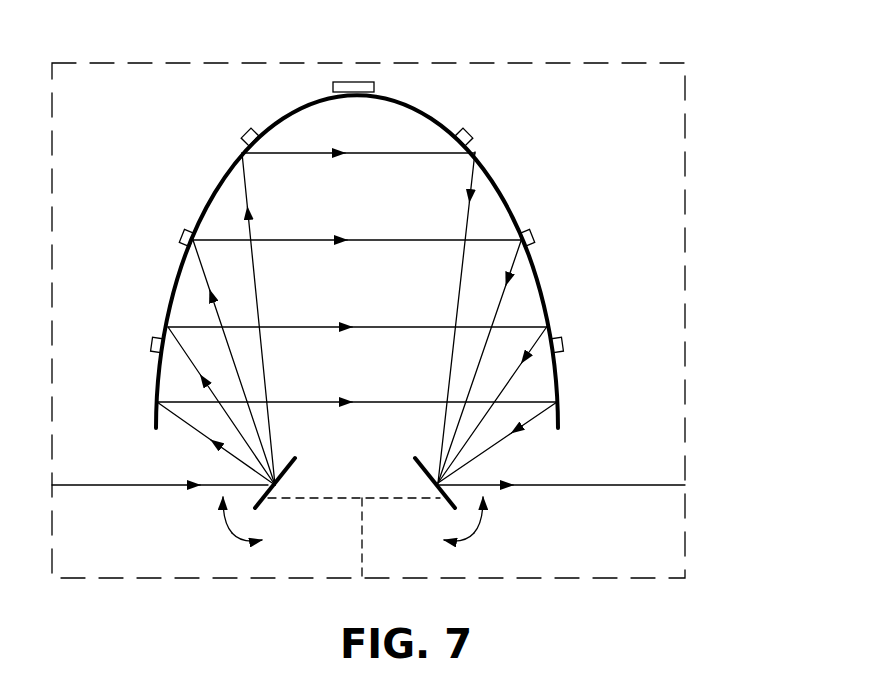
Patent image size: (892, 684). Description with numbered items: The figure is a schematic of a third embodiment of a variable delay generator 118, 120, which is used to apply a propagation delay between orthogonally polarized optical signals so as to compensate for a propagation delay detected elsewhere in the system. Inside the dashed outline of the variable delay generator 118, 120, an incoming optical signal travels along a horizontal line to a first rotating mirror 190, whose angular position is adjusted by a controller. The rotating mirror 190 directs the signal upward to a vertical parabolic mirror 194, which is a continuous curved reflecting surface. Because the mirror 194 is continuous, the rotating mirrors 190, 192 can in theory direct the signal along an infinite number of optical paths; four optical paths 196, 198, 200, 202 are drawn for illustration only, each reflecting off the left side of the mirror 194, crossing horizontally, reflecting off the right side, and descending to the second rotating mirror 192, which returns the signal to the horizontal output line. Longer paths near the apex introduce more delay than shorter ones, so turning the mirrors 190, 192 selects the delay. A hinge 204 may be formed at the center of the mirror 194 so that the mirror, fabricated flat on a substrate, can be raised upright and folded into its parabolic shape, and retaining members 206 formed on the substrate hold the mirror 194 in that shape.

The variable delay generator 118 is at (432, 290).
The variable delay generator 120 is at (641, 51).
The rotating mirror 190 is at (283, 480).
The rotating mirror 192 is at (428, 483).
The vertical parabolic mirror 194 is at (173, 283).
The optical path 196 is at (387, 402).
The optical path 198 is at (387, 327).
The optical path 200 is at (387, 240).
The optical path 202 is at (387, 152).
The hinge 204 is at (375, 88).
The retaining members 206 is at (242, 142).